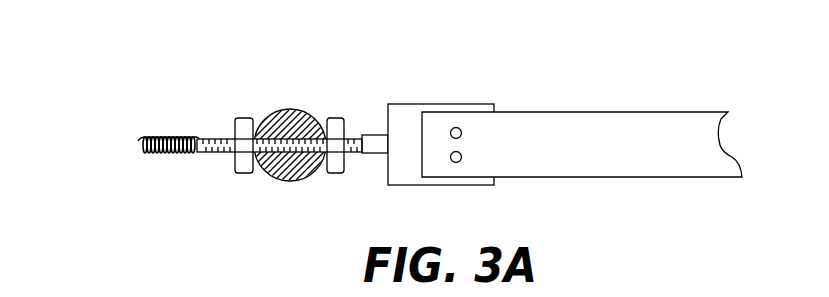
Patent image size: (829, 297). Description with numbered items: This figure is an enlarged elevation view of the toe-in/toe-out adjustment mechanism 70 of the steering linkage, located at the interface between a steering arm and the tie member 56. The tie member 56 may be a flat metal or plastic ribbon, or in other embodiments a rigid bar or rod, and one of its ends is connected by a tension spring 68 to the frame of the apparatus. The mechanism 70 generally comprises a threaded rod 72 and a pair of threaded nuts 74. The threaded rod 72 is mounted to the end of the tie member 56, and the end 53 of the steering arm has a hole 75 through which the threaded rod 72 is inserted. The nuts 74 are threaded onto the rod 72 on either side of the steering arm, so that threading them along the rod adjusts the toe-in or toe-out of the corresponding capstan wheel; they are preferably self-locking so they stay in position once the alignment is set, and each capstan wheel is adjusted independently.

The tension spring 68 is at (173, 137).
The toe-in/toe-out adjustment mechanism 70 is at (274, 131).
The threaded rod 72 is at (263, 157).
The threaded nuts 74 is at (335, 122).
The hole 75 is at (283, 134).
The end of steering arm 53 is at (285, 182).
The tie member 56 is at (575, 112).